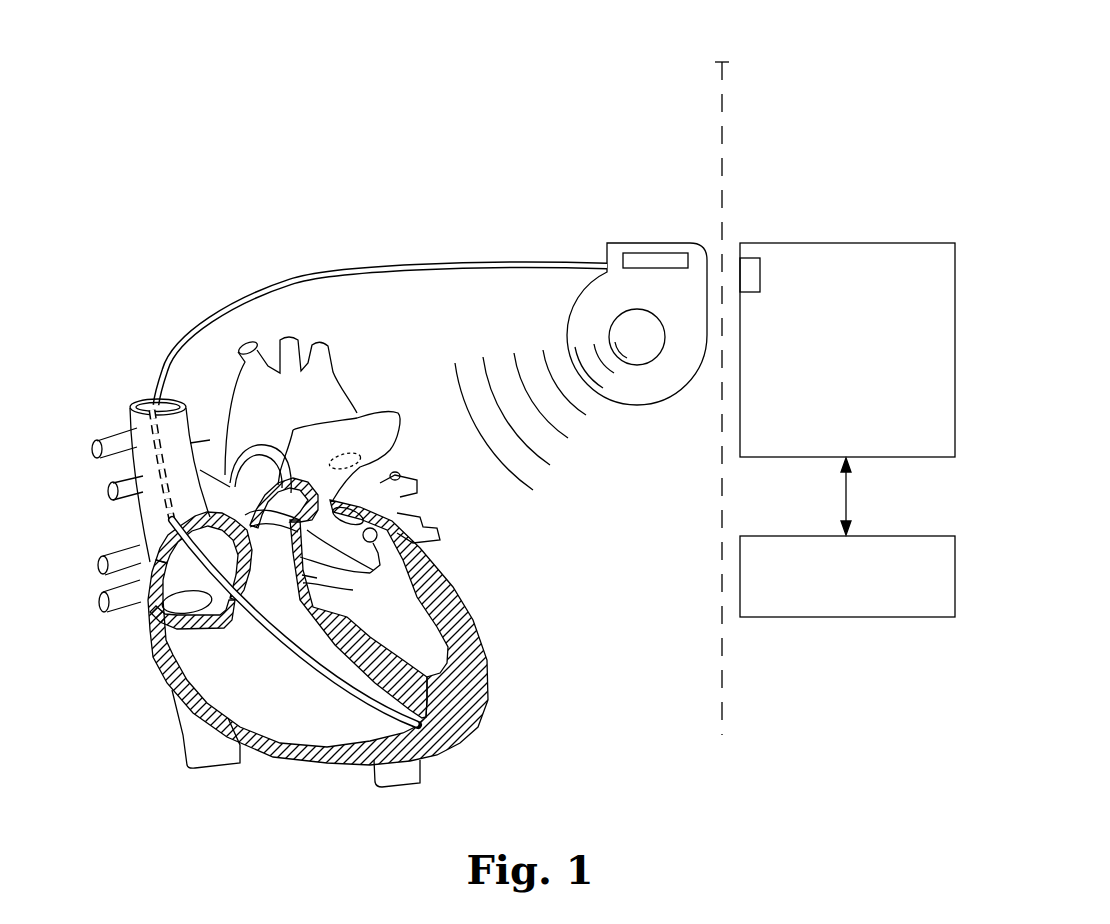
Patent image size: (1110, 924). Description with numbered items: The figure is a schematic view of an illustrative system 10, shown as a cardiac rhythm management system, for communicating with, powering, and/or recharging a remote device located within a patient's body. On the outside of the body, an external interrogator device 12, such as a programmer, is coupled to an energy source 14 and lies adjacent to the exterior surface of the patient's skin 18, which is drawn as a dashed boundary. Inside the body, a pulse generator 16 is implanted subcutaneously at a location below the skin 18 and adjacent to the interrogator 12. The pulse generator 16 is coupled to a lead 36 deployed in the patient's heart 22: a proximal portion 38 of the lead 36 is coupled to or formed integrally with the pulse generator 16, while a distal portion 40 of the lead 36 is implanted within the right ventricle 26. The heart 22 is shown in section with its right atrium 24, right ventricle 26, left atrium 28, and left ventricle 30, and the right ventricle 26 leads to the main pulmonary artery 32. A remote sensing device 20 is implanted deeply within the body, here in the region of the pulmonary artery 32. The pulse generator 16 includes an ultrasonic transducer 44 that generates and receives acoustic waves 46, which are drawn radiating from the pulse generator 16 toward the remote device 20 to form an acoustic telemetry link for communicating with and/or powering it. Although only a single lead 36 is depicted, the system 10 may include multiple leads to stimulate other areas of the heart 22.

The system 10 is at (383, 193).
The external interrogator device 12 is at (876, 236).
The energy source 14 is at (920, 535).
The pulse generator 16 is at (637, 287).
The skin 18 is at (722, 64).
The remote sensing device 20 is at (360, 457).
The heart 22 is at (321, 574).
The right atrium 24 is at (150, 593).
The right ventricle 26 is at (253, 697).
The left atrium 28 is at (420, 560).
The left ventricle 30 is at (430, 635).
The main pulmonary artery 32 is at (330, 440).
The lead 36 is at (381, 278).
The proximal portion 38 is at (562, 262).
The distal portion 40 is at (423, 738).
The ultrasonic transducer 44 is at (640, 347).
The acoustic waves 46 is at (520, 433).